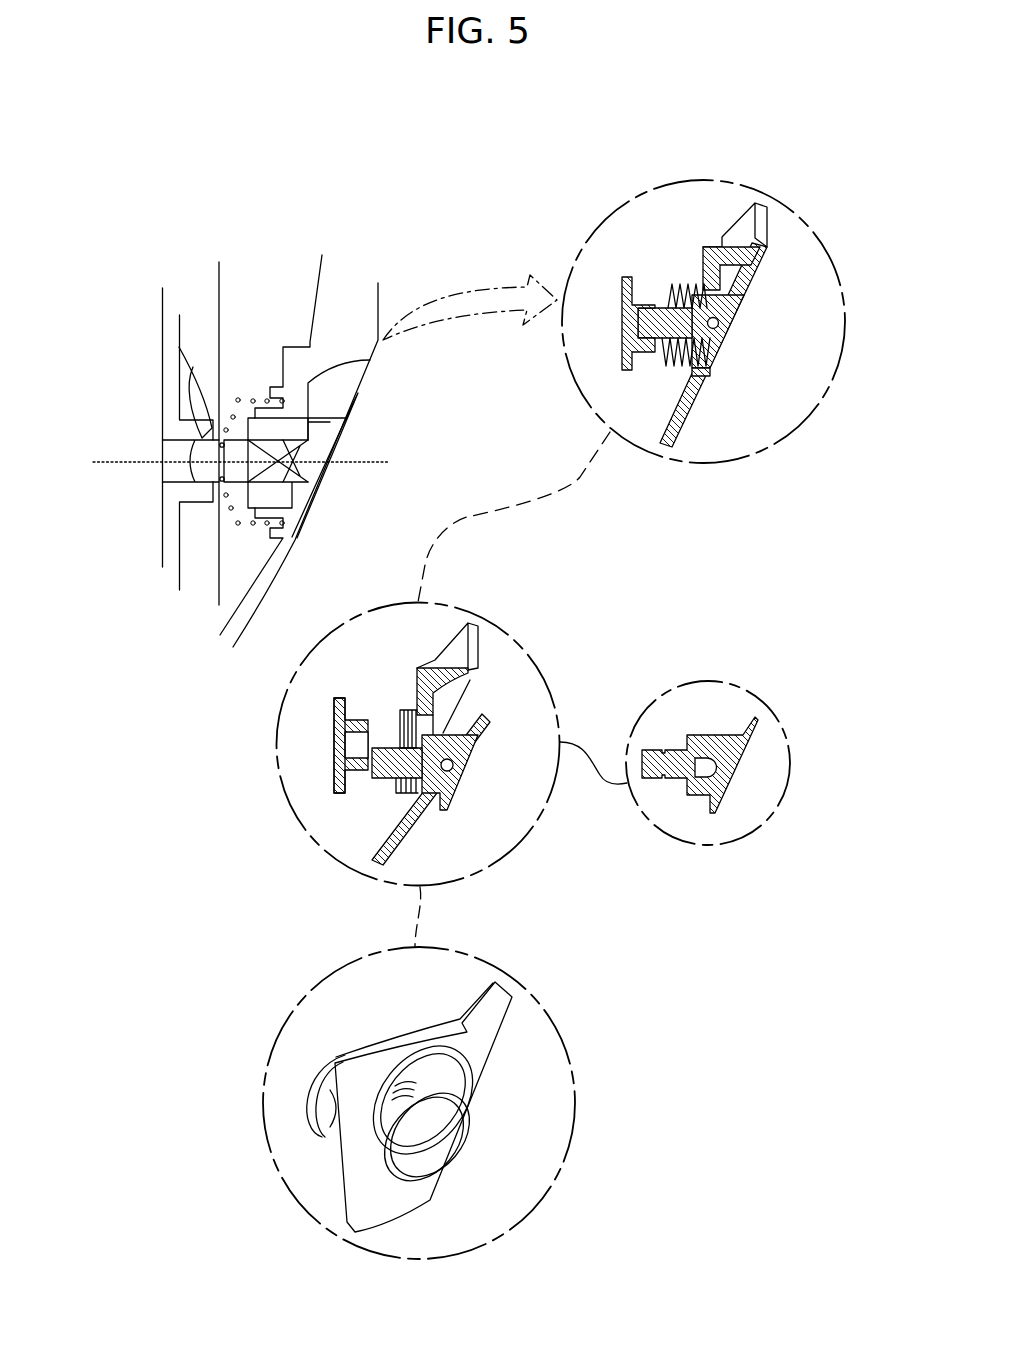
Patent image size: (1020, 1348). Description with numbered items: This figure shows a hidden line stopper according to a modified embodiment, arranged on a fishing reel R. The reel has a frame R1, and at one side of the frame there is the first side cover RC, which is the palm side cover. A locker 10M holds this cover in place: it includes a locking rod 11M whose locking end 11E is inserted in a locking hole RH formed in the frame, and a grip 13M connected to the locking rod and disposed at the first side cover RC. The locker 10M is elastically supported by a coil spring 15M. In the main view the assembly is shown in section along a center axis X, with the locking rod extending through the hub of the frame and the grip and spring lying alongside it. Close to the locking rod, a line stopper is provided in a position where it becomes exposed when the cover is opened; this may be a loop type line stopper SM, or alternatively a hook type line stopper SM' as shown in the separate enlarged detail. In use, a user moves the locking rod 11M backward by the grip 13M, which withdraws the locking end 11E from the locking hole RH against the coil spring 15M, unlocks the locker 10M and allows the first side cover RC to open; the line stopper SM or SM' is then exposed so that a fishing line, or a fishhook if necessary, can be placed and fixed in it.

The fishing reel R is at (139, 189).
The frame R1 is at (158, 352).
The center axis X is at (222, 461).
The locker 10M is at (362, 439).
The locking end 11E is at (201, 432).
The locking hole RH is at (356, 748).
The coil spring 15M is at (237, 398).
The first side cover RC is at (362, 301).
The grip 13M is at (720, 263).
The locking rod 11M is at (678, 367).
The loop type line stopper SM is at (638, 554).
The hook type line stopper SM' is at (700, 723).